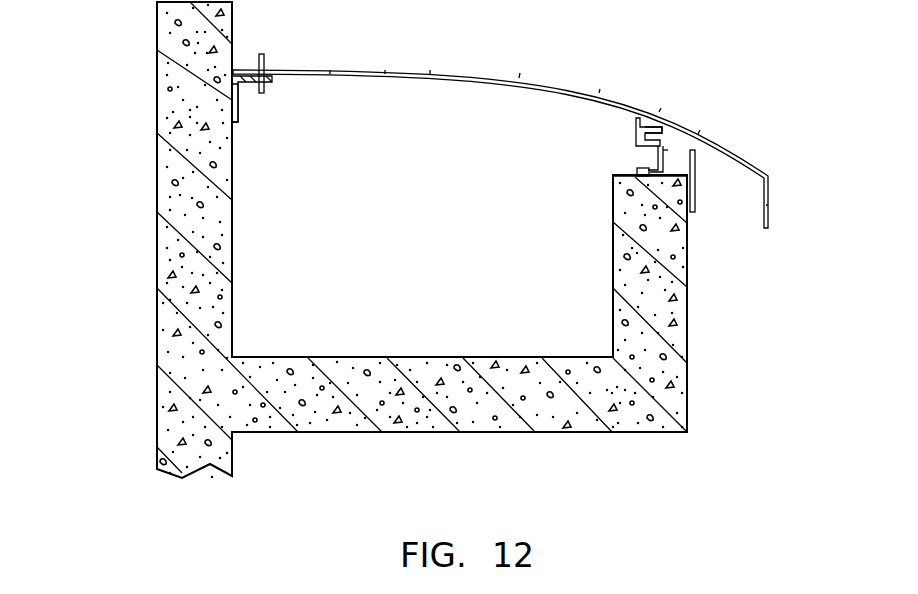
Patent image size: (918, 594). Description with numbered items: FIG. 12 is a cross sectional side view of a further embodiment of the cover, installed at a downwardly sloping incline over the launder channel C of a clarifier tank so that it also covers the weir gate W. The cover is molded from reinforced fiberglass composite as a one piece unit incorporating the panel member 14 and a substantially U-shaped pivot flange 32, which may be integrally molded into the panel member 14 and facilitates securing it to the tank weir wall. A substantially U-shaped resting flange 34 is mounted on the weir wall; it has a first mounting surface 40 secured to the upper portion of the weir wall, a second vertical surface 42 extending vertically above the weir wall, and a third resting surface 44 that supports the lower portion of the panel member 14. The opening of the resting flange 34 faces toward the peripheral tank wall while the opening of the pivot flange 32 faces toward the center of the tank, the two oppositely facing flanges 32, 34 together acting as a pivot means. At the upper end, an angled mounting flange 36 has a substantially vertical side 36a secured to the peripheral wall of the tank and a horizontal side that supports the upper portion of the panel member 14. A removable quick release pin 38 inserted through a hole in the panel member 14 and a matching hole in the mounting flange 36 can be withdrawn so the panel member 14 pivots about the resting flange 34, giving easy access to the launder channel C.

The panel member 14 is at (460, 72).
The U-shaped pivot flange 32 is at (634, 125).
The U-shaped resting flange 34 is at (668, 151).
The angled mounting flange 36 is at (240, 103).
The vertical side 36a is at (238, 100).
The quick release pin 38 is at (264, 58).
The first mounting surface 40 is at (638, 176).
The second vertical surface 42 is at (655, 155).
The third resting surface 44 is at (652, 136).
The weir gate W is at (696, 176).
The launder channel C is at (467, 340).